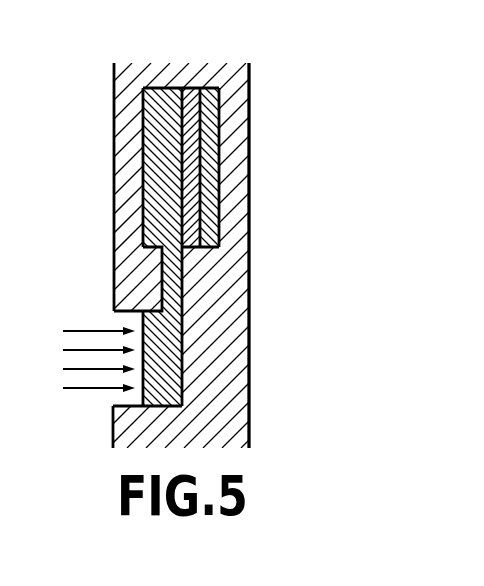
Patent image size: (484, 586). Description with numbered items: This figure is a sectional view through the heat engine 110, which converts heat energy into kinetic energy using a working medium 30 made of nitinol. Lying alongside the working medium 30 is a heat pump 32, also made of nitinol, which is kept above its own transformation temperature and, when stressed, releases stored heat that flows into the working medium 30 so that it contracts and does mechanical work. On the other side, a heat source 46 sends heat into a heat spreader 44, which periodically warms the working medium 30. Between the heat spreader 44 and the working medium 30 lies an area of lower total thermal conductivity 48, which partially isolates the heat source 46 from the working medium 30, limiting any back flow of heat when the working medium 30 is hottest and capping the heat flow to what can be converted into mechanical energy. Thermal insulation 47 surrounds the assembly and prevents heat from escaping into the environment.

The heat engine 110 is at (273, 88).
The working medium 30 is at (190, 86).
The heat pump 32 is at (212, 86).
The heat spreader 44 is at (165, 132).
The heat source 46 is at (97, 388).
The thermal insulation 47 is at (113, 190).
The area of lower total thermal conductivity 48 is at (168, 281).